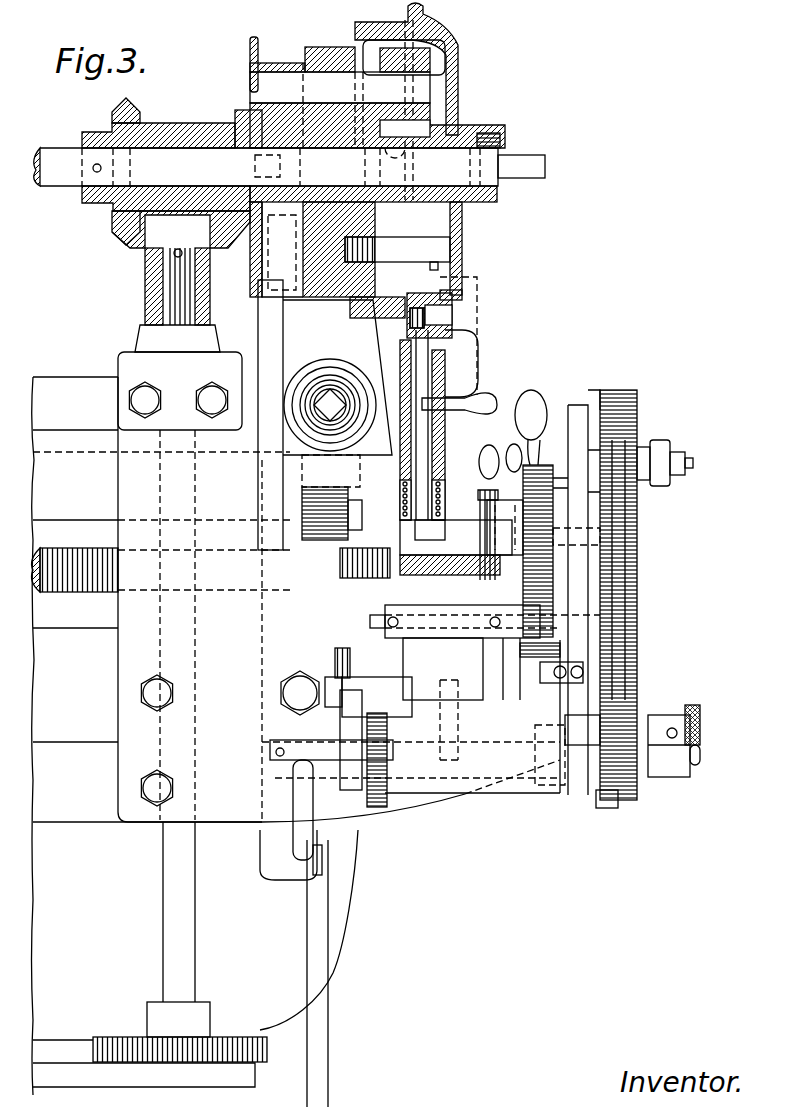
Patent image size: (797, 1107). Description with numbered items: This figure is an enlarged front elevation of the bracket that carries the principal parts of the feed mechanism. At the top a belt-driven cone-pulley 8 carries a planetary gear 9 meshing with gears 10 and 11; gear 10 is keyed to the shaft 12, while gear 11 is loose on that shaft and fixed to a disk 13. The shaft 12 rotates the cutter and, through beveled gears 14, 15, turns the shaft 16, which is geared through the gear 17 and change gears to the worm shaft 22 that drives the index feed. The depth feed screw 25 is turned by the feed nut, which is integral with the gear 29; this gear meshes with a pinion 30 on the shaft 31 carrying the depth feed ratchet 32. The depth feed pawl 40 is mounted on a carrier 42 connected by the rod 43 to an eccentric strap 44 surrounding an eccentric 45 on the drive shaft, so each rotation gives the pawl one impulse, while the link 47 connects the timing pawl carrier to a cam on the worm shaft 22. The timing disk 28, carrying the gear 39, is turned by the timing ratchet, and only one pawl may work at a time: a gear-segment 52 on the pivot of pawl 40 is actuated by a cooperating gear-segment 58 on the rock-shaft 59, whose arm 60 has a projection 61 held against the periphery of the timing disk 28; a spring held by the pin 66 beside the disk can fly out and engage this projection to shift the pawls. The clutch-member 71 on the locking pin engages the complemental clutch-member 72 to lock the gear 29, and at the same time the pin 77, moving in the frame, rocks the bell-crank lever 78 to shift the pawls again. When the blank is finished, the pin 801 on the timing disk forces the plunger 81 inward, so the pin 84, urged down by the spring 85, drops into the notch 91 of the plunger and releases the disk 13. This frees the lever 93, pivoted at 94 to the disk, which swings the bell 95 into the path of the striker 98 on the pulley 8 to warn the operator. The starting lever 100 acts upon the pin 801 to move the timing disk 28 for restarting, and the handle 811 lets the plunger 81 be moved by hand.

The cone-pulley 8 is at (325, 46).
The planetary gear 9 is at (395, 60).
The gear 10 is at (415, 125).
The loose gear 11 is at (462, 131).
The shaft 12 is at (160, 160).
The disk 13 is at (450, 97).
The beveled gear 14 is at (112, 118).
The beveled gear 15 is at (143, 238).
The shaft 16 is at (165, 293).
The gear 17 is at (220, 1047).
The worm shaft 22 is at (460, 9).
The depth feed screw 25 is at (345, 580).
The timing disk 28 is at (578, 460).
The feed-nut gear 29 is at (617, 597).
The pinion 30 is at (617, 775).
The shaft 31 is at (647, 775).
The depth feed ratchet 32 is at (377, 793).
The gear 39 is at (544, 441).
The depth feed pawl 40 is at (375, 690).
The pawl-carrier 42 is at (350, 722).
The rod 43 is at (276, 348).
The eccentric strap 44 is at (248, 115).
The eccentric 45 is at (250, 88).
The link 47 is at (315, 1020).
The gear-segment 52 is at (393, 681).
The gear-segment 58 is at (395, 652).
The rock-shaft 59 is at (440, 622).
The arm 60 is at (493, 740).
The projection 61 is at (583, 671).
The pin 66 is at (557, 650).
The clutch-member 71 is at (663, 720).
The complemental clutch-member 72 is at (643, 720).
The pin 77 is at (498, 737).
The bell-crank lever 78 is at (440, 720).
The plunger 81 is at (530, 422).
The pin 84 is at (420, 383).
The spring 85 is at (444, 447).
The notch 91 is at (397, 573).
The lever 93 is at (455, 333).
The pivot 94 is at (440, 317).
The bell 95 is at (458, 368).
The striker 98 is at (428, 241).
The starting lever 100 is at (533, 400).
The pin 801 is at (513, 567).
The handle 811 is at (485, 463).